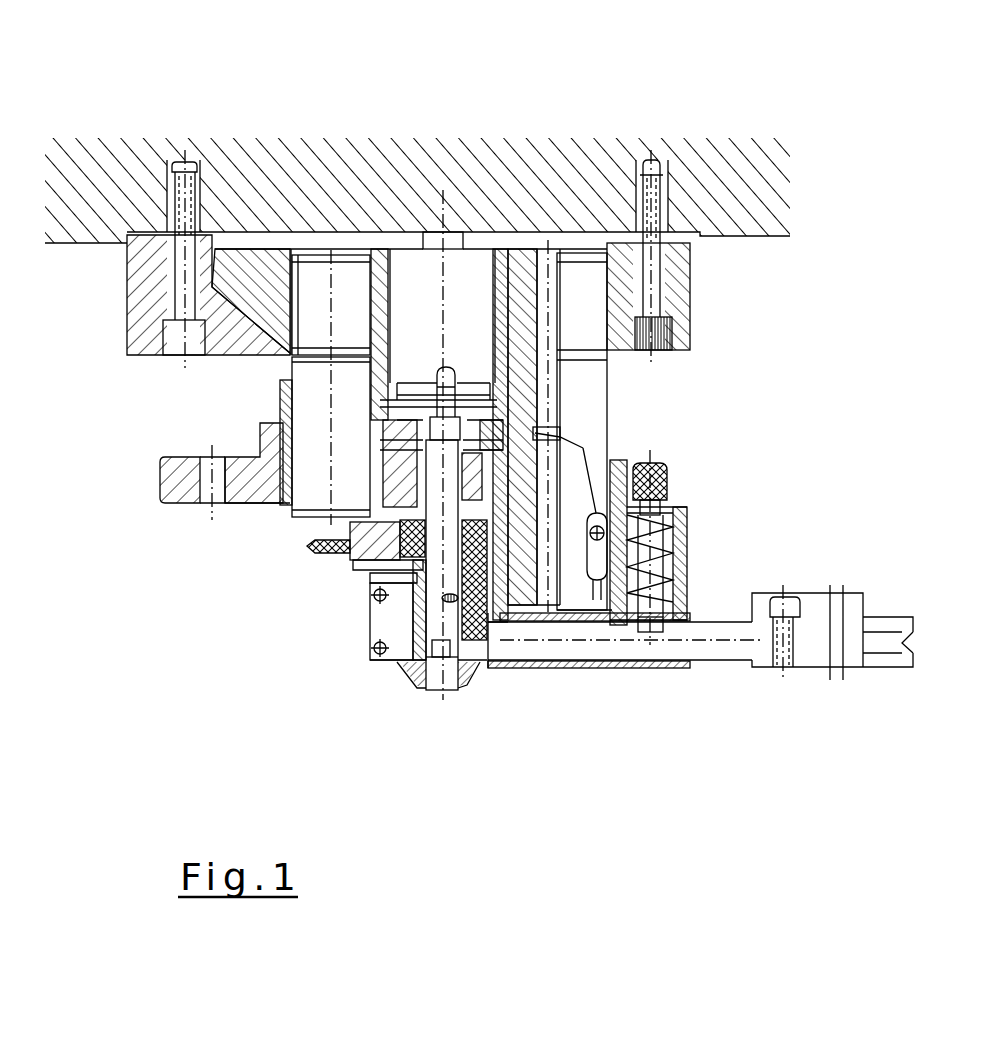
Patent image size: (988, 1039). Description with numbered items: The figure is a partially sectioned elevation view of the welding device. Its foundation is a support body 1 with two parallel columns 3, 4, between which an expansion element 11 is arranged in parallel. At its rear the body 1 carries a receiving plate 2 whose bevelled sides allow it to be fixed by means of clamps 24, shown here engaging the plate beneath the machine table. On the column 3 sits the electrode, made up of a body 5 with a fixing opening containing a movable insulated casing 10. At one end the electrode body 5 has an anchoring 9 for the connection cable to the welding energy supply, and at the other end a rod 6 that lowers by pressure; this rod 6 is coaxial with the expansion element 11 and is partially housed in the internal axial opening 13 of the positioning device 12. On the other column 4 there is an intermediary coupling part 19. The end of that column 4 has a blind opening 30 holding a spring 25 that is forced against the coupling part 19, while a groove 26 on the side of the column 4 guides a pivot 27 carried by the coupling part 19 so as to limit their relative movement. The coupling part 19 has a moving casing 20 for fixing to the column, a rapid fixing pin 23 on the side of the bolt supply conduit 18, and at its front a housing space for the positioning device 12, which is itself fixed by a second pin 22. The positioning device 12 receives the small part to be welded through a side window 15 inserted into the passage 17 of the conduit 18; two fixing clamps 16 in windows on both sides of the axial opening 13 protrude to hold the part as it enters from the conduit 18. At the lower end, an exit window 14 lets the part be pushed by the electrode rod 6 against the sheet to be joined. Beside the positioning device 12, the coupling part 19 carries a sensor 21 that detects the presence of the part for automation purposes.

The support body 1 is at (378, 238).
The receiving plate 2 is at (282, 237).
The column 3 is at (313, 280).
The column 4 is at (515, 270).
The electrode body 5 is at (262, 427).
The electrode rod 6 is at (350, 498).
The anchoring 9 is at (203, 500).
The movable insulated casing 10 is at (276, 390).
The expansion element 11 is at (407, 270).
The positioning device 12 is at (410, 676).
The internal axial opening 13 is at (437, 612).
The exit window 14 is at (453, 690).
The side window 15 is at (472, 650).
The fixing clamps 16 is at (440, 697).
The passage 17 is at (511, 647).
The bolt supply conduit 18 is at (740, 660).
The intermediary coupling part 19 is at (650, 598).
The moving casing 20 is at (578, 455).
The sensor 21 is at (380, 613).
The second pin 22 is at (322, 552).
The rapid fixing pin 23 is at (690, 520).
The clamps 24 is at (130, 288).
The spring 25 is at (560, 433).
The groove 26 is at (687, 560).
The pivot 27 is at (594, 452).
The blind opening 30 is at (548, 624).